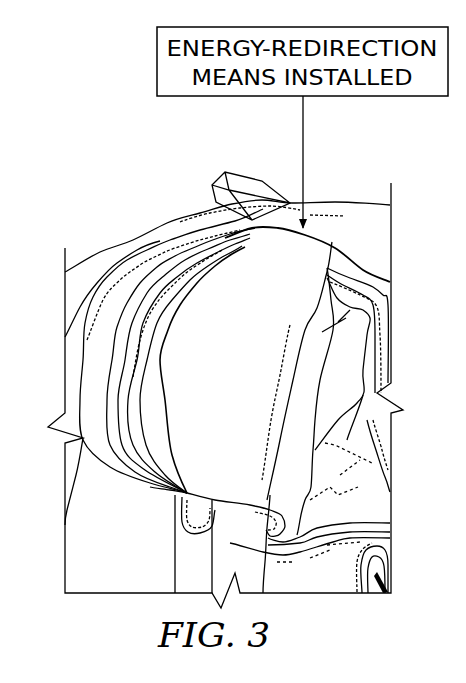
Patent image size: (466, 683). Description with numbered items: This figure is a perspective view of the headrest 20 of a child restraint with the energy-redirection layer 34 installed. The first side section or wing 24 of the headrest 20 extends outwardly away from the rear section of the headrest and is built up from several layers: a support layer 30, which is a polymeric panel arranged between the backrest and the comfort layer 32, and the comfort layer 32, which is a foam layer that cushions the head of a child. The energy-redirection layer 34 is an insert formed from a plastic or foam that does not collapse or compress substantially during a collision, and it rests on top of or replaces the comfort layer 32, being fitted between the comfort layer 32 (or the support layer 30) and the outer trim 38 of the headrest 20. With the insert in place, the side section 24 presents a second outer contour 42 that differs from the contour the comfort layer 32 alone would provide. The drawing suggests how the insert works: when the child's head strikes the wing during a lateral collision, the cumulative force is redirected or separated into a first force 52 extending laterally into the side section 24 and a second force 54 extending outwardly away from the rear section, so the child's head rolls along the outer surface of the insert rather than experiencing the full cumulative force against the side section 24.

The headrest 20 is at (346, 175).
The first side section or wing 24 is at (98, 267).
The support layer 30 is at (133, 268).
The comfort layer 32 is at (160, 260).
The energy-redirection layer or insert 34 is at (250, 225).
The outer trim 38 is at (392, 428).
The second outer contour 42 is at (262, 327).
The first force 52 is at (212, 337).
The second force 54 is at (250, 350).